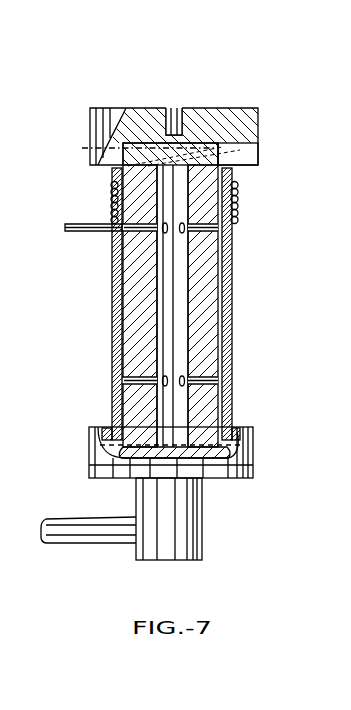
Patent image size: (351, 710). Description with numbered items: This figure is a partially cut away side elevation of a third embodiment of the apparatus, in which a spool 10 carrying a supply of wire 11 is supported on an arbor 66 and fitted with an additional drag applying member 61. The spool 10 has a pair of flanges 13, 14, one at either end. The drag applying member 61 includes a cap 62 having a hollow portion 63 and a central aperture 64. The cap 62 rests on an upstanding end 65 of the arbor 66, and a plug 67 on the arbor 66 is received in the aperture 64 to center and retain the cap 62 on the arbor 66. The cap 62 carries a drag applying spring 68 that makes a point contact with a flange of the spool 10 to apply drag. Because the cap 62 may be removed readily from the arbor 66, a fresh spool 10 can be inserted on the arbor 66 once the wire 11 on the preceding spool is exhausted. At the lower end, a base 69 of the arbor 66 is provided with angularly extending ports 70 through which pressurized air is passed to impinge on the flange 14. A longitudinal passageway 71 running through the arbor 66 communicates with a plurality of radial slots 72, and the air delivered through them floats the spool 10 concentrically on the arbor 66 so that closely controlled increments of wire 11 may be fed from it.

The spool 10 is at (173, 309).
The wire 11 is at (85, 230).
The flange 13 is at (110, 172).
The flange 14 is at (233, 427).
The drag applying member 61 is at (198, 111).
The cap 62 is at (245, 108).
The hollow portion 63 is at (242, 156).
The central aperture 64 is at (166, 124).
The upstanding end 65 is at (203, 140).
The arbor 66 is at (213, 302).
The plug 67 is at (182, 122).
The drag applying spring 68 is at (150, 152).
The base 69 is at (250, 470).
The angularly extending ports 70 is at (98, 460).
The longitudinal passageway 71 is at (189, 328).
The radial slots 72 is at (115, 235).